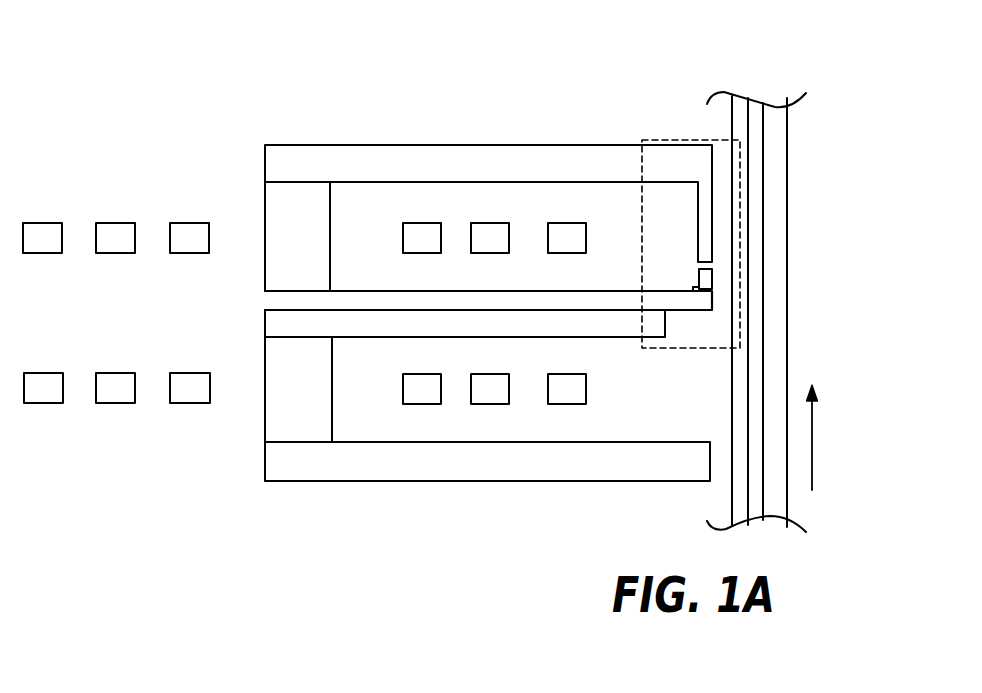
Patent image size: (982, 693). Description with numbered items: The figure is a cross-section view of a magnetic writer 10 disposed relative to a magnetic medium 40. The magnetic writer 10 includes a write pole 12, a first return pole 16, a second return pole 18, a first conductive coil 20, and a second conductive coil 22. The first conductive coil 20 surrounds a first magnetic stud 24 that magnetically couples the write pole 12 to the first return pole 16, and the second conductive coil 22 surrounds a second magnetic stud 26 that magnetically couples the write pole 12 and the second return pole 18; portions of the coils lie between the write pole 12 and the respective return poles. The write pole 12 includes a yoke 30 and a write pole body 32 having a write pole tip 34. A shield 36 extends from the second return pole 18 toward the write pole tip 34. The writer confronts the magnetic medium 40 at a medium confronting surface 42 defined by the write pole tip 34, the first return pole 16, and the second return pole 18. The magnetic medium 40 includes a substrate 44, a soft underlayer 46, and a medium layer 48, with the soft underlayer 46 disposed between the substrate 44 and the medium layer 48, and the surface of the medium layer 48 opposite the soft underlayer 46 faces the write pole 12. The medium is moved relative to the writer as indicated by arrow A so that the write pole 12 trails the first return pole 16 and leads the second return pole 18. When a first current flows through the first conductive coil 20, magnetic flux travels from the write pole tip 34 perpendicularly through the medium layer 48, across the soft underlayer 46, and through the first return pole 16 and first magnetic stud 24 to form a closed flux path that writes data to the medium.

The magnetic writer 10 is at (220, 68).
The write pole 12 is at (229, 315).
The first return pole 16 is at (274, 458).
The second return pole 18 is at (281, 159).
The first conductive coil 20 is at (112, 428).
The second conductive coil 22 is at (120, 200).
The first magnetic stud 24 is at (272, 413).
The second magnetic stud 26 is at (280, 214).
The yoke 30 is at (372, 328).
The write pole body 32 is at (369, 302).
The write pole tip 34 is at (676, 304).
The shield 36 is at (686, 257).
The magnetic medium 40 is at (831, 129).
The medium confronting surface 42 is at (720, 150).
The substrate 44 is at (777, 175).
The soft underlayer 46 is at (754, 232).
The medium layer 48 is at (740, 361).